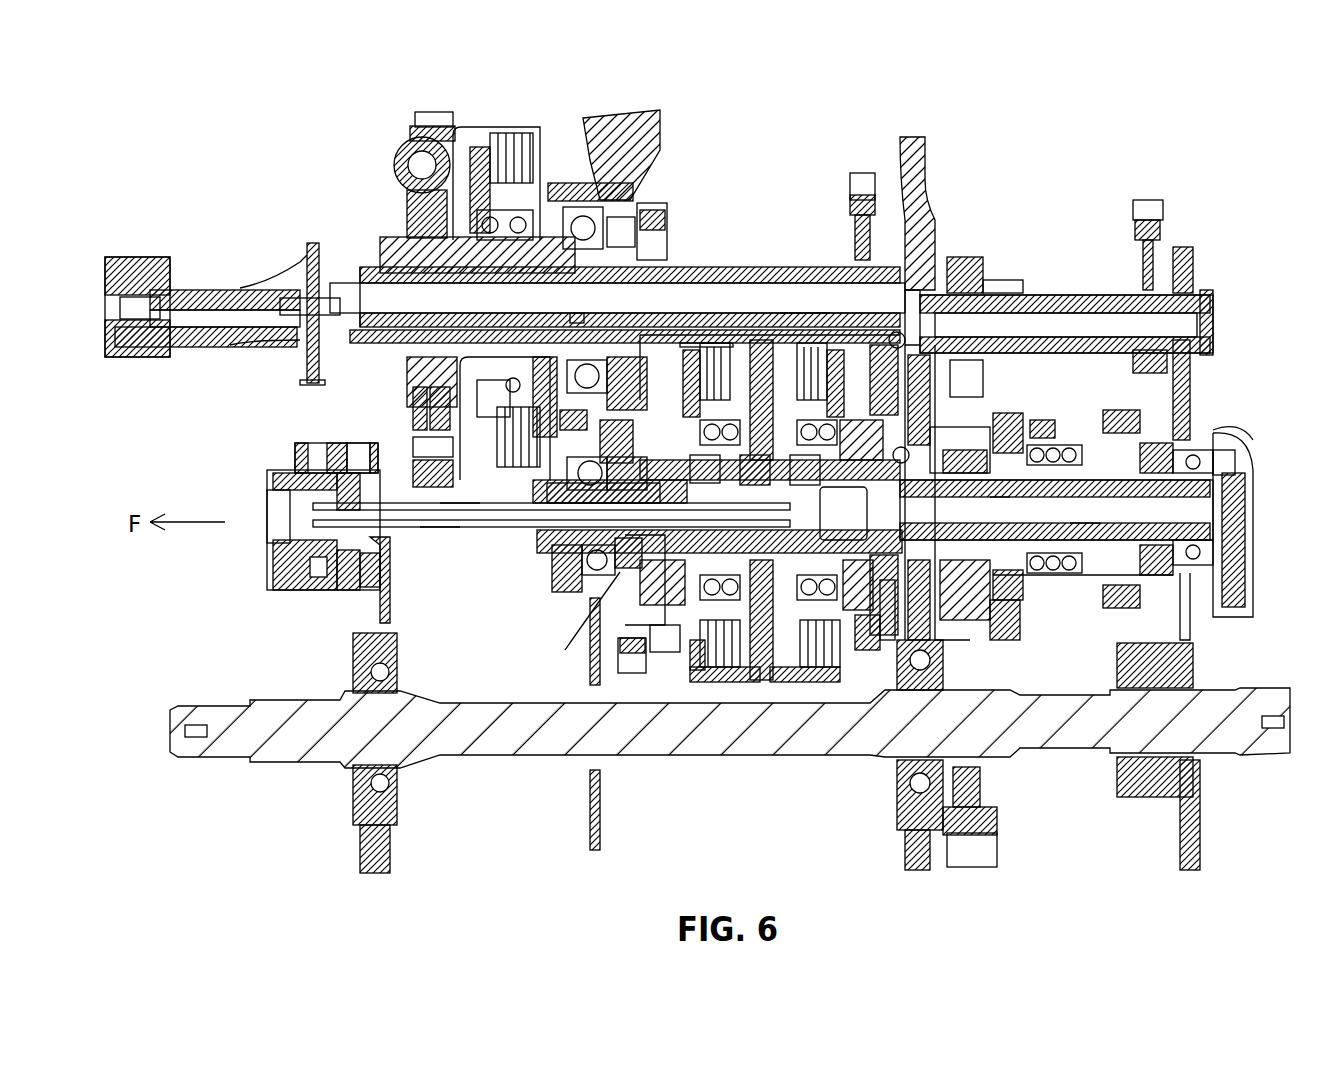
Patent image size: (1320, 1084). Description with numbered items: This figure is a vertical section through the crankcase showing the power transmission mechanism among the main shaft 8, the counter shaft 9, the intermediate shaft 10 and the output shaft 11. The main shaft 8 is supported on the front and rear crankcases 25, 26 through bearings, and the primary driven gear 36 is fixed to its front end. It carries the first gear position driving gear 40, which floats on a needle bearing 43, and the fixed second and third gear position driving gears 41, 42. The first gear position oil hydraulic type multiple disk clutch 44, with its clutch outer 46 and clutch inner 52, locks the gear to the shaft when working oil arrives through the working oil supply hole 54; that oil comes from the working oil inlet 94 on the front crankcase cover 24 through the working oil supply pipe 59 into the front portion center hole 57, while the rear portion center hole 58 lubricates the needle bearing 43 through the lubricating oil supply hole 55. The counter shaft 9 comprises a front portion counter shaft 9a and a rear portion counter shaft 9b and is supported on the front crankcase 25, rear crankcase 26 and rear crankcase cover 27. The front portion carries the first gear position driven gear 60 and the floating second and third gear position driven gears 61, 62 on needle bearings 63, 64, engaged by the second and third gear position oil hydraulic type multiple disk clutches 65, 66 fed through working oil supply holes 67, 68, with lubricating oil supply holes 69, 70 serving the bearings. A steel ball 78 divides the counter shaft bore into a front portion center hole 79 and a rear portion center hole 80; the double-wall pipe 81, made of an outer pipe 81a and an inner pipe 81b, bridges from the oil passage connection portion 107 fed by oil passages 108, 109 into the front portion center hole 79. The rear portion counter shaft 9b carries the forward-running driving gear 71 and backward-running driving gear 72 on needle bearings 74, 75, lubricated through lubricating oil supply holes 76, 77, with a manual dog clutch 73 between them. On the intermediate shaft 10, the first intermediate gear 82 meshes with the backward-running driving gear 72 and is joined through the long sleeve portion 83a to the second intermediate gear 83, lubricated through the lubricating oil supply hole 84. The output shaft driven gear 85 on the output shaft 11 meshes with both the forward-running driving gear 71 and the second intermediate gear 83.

The main shaft 8 is at (775, 268).
The counter shaft 9 is at (1068, 615).
The front portion counter shaft 9a is at (580, 635).
The rear portion counter shaft 9b is at (985, 603).
The intermediate shaft 10 is at (1075, 300).
The output shaft 11 is at (498, 740).
The front crankcase cover 24 is at (210, 292).
The front crankcase 25 is at (622, 118).
The rear crankcase 26 is at (912, 140).
The rear crankcase cover 27 is at (1185, 250).
The primary driven gear 36 is at (418, 113).
The first gear position driving gear 40 is at (600, 225).
The second gear position driving gear 41 is at (640, 215).
The third gear position driving gear 42 is at (866, 170).
The needle bearing 43 is at (580, 275).
The first gear position oil hydraulic type multiple disk clutch 44 is at (486, 110).
The clutch outer 46 is at (520, 130).
The clutch inner 52 is at (543, 185).
The working oil supply hole 54 is at (338, 300).
The lubricating oil supply hole 55 is at (598, 318).
The front portion center hole 57 is at (420, 237).
The rear portion center hole 58 is at (803, 300).
The working oil supply pipe 59 is at (228, 290).
The first gear position driven gear 60 is at (630, 672).
The second gear position driven gear 61 is at (663, 652).
The third gear position driven gear 62 is at (886, 630).
The needle bearing 63 is at (680, 650).
The needle bearing 64 is at (863, 640).
The second gear position oil hydraulic type multiple disk clutch 65 is at (736, 697).
The third gear position oil hydraulic type multiple disk clutch 66 is at (816, 696).
The working oil supply hole 67 is at (745, 470).
The working oil supply hole 68 is at (790, 470).
The lubricating oil supply hole 69 is at (690, 470).
The lubricating oil supply hole 70 is at (1054, 510).
The forward-running driving gear 71 is at (965, 432).
The backward-running driving gear 72 is at (1230, 430).
The manual dog clutch 73 is at (1218, 370).
The needle bearing 74 is at (1084, 402).
The needle bearing 75 is at (1222, 440).
The lubricating oil supply hole 76 is at (995, 497).
The lubricating oil supply hole 77 is at (1156, 497).
The steel ball 78 is at (843, 513).
The front portion center hole 79 is at (765, 541).
The rear portion center hole 80 is at (1075, 523).
The double-wall pipe 81 is at (488, 592).
The outer pipe 81a is at (430, 528).
The inner pipe 81b is at (450, 528).
The first intermediate gear 82 is at (1150, 200).
The second intermediate gear 83 is at (965, 258).
The long sleeve portion 83a is at (1023, 295).
The lubricating oil supply hole 84 is at (965, 318).
The output shaft driven gear 85 is at (998, 845).
The working oil inlet 94 is at (228, 352).
The oil passage connection portion 107 is at (240, 458).
The oil passage 108 is at (362, 448).
The oil passage 109 is at (312, 448).